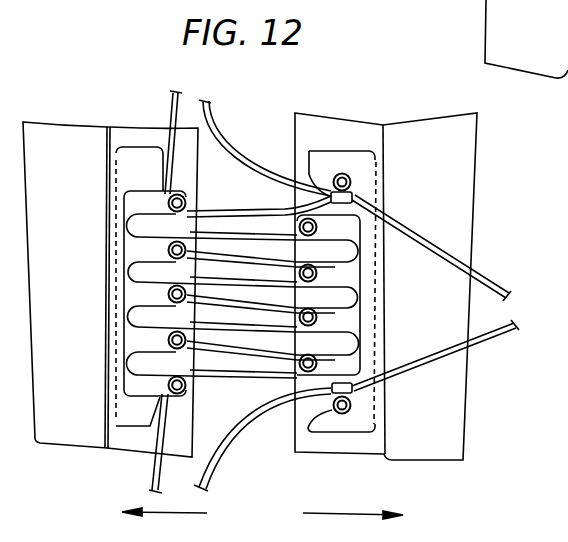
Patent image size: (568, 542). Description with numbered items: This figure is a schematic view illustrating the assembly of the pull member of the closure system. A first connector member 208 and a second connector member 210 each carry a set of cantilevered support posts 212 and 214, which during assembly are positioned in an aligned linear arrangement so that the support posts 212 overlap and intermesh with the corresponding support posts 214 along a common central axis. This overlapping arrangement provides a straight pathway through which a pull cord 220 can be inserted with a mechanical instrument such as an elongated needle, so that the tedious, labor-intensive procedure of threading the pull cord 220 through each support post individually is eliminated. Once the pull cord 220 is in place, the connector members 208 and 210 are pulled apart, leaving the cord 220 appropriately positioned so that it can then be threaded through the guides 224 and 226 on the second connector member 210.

The first connector member 208 is at (75, 423).
The second connector member 210 is at (417, 445).
The support posts 212 is at (166, 340).
The support posts 214 is at (325, 366).
The pull cord 220 is at (245, 163).
The guide 224 is at (350, 188).
The guide 226 is at (355, 407).